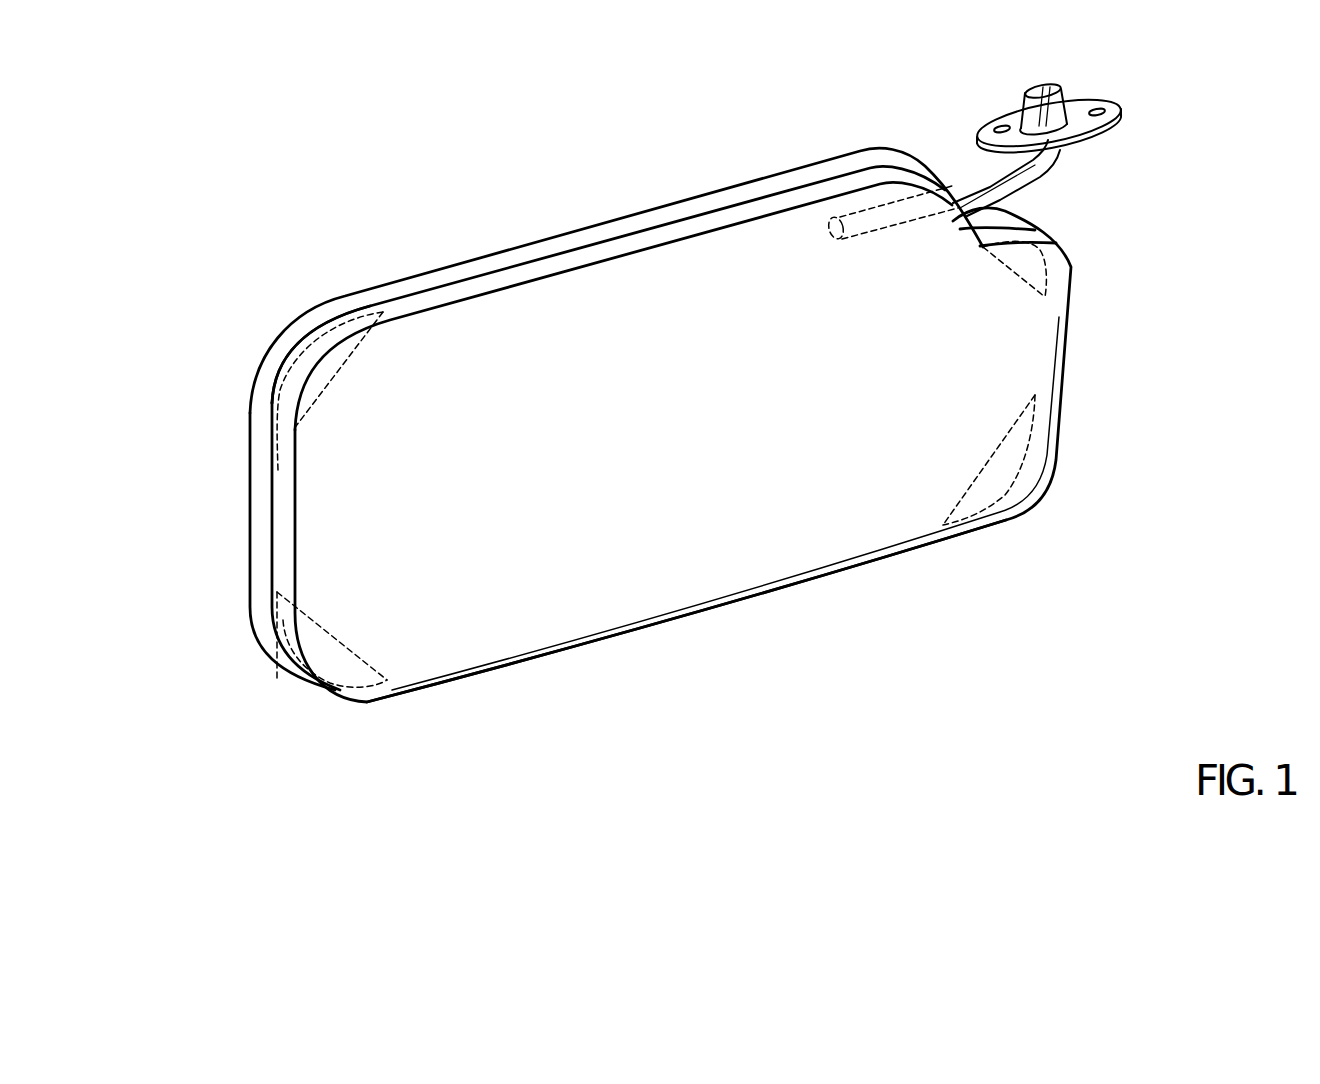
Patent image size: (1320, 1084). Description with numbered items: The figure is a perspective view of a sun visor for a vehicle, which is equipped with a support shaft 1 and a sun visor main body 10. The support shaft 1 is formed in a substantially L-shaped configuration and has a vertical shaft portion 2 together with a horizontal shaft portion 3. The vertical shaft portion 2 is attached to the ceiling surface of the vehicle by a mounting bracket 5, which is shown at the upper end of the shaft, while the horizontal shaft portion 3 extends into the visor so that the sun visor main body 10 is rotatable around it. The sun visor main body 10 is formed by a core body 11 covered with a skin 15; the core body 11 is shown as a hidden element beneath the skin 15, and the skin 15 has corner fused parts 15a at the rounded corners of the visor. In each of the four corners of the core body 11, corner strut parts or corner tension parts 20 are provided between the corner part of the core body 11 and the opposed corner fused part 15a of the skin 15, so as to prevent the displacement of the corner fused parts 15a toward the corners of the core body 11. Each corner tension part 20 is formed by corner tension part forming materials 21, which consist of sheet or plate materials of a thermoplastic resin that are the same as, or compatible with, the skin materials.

The support shaft 1 is at (976, 174).
The vertical shaft portion 2 is at (1060, 150).
The horizontal shaft portion 3 is at (877, 217).
The mounting bracket 5 is at (1077, 103).
The sun visor main body 10 is at (600, 213).
The core body 11 is at (718, 580).
The skin 15 is at (810, 578).
The corner fused parts 15a is at (302, 350).
The corner tension parts 20 is at (653, 498).
The corner tension part forming materials 21 is at (170, 449).